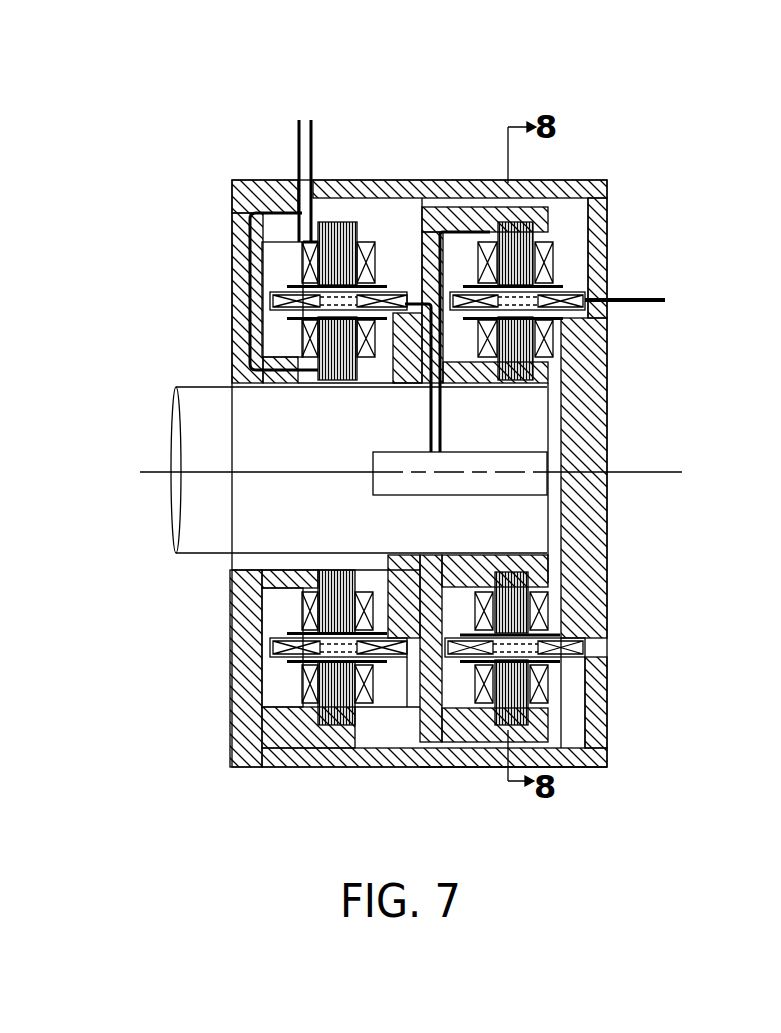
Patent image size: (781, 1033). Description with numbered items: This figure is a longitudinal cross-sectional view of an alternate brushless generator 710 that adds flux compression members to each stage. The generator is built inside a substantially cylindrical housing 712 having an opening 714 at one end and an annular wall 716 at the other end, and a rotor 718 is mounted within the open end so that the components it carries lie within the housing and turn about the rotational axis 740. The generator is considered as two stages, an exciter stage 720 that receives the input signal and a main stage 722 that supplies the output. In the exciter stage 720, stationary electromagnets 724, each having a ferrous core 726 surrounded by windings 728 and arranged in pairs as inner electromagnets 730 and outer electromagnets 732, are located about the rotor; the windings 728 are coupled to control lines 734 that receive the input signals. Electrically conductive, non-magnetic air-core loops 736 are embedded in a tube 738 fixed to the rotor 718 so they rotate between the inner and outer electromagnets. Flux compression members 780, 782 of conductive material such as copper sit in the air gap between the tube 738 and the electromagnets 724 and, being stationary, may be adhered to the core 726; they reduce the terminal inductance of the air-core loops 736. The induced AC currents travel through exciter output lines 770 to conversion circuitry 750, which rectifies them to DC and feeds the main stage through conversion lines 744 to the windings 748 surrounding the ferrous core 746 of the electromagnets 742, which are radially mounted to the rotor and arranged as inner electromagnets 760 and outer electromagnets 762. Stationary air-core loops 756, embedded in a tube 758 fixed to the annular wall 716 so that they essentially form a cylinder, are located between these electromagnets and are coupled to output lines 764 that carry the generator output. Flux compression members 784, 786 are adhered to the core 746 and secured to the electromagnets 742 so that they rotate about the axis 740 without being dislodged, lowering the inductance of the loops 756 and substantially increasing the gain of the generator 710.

The brushless generator 710 is at (440, 88).
The housing 712 is at (418, 183).
The opening 714 is at (235, 382).
The annular wall 716 is at (608, 262).
The rotor 718 is at (193, 553).
The exciter stage 720 is at (403, 810).
The main stage 722 is at (589, 810).
The electromagnets 724 is at (328, 570).
The ferrous core 726 is at (352, 262).
The windings 728 is at (383, 263).
The inner electromagnets 730 is at (358, 585).
The outer electromagnets 732 is at (367, 740).
The control lines 734 is at (322, 106).
The air-core loops 736 is at (280, 655).
The tube 738 is at (407, 640).
The axis 740 is at (629, 472).
The electromagnets 742 is at (497, 570).
The conversion lines 744 is at (447, 433).
The ferrous core 746 is at (548, 220).
The windings 748 is at (555, 262).
The conversion circuitry 750 is at (400, 452).
The air-core loops 756 is at (584, 647).
The tube 758 is at (437, 745).
The inner electromagnets 760 is at (415, 575).
The outer electromagnets 762 is at (548, 689).
The output lines 764 is at (655, 297).
The exciter output lines 770 is at (428, 412).
The flux compression member 780 is at (290, 285).
The flux compression member 782 is at (240, 315).
The flux compression member 784 is at (612, 283).
The flux compression member 786 is at (567, 320).